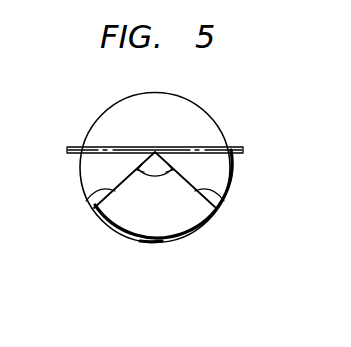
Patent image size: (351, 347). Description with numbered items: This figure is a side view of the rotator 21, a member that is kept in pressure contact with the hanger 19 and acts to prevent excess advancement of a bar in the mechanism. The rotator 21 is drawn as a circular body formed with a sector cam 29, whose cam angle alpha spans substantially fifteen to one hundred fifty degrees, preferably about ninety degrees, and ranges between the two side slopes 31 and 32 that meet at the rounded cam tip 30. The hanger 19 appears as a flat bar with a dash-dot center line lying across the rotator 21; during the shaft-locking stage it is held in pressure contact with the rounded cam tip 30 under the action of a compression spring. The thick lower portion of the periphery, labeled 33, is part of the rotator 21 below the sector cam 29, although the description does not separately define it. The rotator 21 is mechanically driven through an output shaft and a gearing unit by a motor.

The hanger 19 is at (244, 149).
The rotator 21 is at (228, 180).
The sector cam 29 is at (182, 215).
The rounded cam tip 30 is at (155, 152).
The side slope 31 is at (223, 199).
The side slope 32 is at (86, 201).
The bottom portion 33 is at (151, 244).